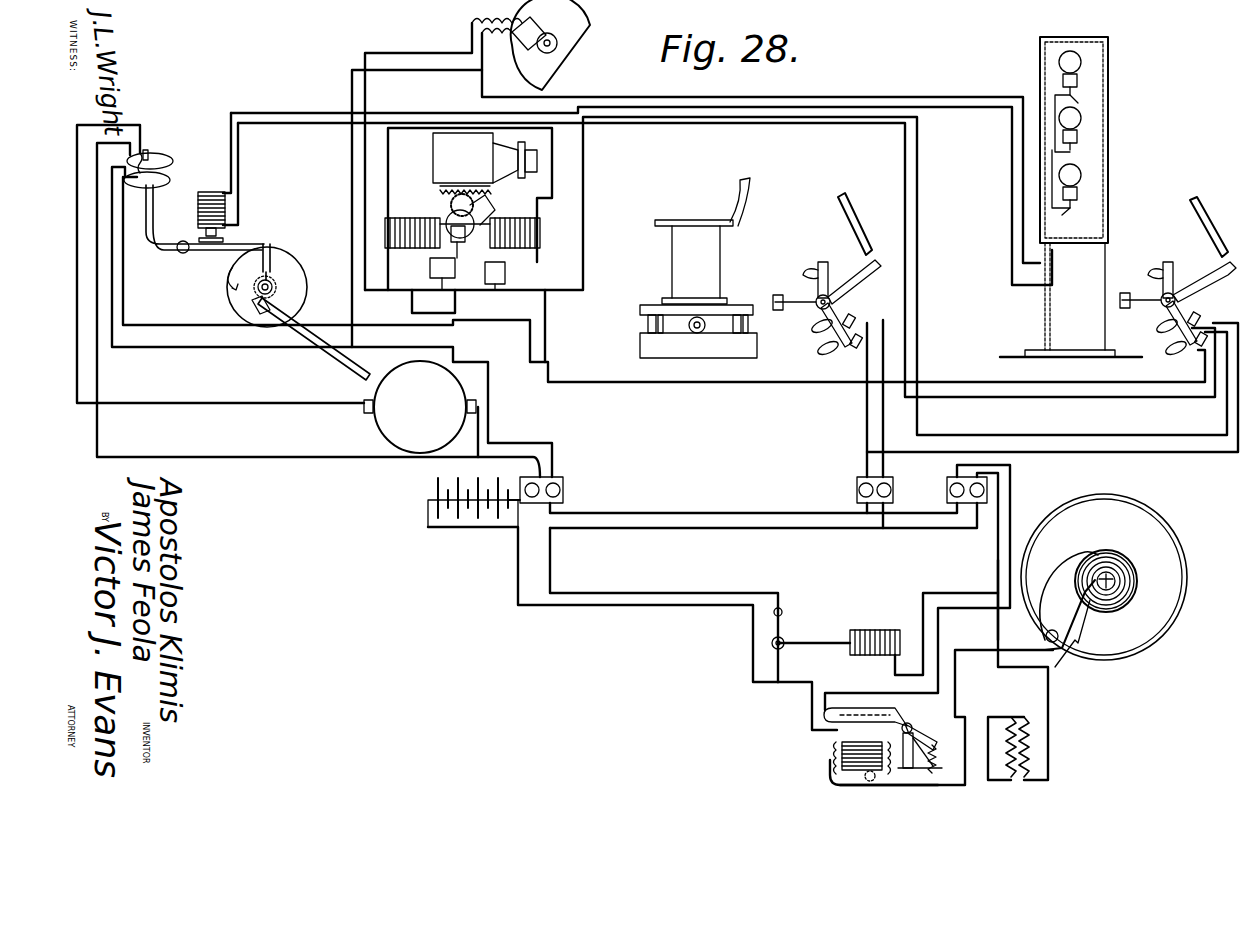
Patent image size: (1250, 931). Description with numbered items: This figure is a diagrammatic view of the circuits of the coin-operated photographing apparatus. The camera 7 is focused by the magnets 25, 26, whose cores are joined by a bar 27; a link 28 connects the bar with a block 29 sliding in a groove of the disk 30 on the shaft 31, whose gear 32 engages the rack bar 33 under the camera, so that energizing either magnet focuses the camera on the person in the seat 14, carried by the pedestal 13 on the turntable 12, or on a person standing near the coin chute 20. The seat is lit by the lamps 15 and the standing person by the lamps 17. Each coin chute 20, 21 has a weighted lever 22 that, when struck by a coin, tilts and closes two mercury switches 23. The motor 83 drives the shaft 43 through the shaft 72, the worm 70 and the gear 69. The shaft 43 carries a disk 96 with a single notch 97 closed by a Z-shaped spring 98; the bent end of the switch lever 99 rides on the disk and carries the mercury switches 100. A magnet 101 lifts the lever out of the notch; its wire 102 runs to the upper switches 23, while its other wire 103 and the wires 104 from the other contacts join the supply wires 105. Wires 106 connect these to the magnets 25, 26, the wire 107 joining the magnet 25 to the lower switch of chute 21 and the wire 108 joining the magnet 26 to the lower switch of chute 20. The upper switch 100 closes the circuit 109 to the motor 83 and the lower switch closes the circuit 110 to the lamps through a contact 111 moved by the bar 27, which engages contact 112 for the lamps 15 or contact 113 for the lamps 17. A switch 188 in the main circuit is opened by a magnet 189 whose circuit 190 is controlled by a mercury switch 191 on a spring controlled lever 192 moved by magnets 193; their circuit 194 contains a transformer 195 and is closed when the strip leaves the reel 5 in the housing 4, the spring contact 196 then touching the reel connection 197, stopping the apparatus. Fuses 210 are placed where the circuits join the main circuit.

The housing 4 is at (1185, 590).
The reel 5 is at (1112, 555).
The camera 7 is at (471, 208).
The turntable 12 is at (672, 292).
The pedestal 13 is at (672, 270).
The seat 14 is at (688, 220).
The lamps 15 is at (550, 46).
The lamps 17 is at (1078, 62).
The coin chute 20 is at (1205, 197).
The coin chute 21 is at (858, 185).
The weighted lever 22 is at (868, 280).
The mercury switches 23 is at (815, 330).
The magnet 25 is at (395, 250).
The magnet 26 is at (535, 244).
The bar 27 is at (520, 224).
The link 28 is at (458, 244).
The block 29 is at (474, 224).
The disk 30 is at (451, 205).
The shaft 31 is at (485, 198).
The gear 32 is at (463, 183).
The rack bar 33 is at (440, 190).
The shaft 43 is at (272, 280).
The gear 69 is at (265, 315).
The worm 70 is at (250, 302).
The shaft 72 is at (330, 320).
The motor 83 is at (395, 432).
The disk 96 is at (211, 287).
The notch 97 is at (210, 262).
The spring 98 is at (272, 255).
The switch lever 99 is at (170, 258).
The mercury switches 100 is at (170, 180).
The magnet 101 is at (225, 203).
The wire 102 is at (730, 122).
The wire 103 is at (917, 215).
The wires 104 is at (867, 425).
The supply wires 105 is at (815, 528).
The wires 106 is at (388, 128).
The wire 107 is at (495, 322).
The wire 108 is at (548, 330).
The circuit 109 is at (97, 380).
The circuit 110 is at (205, 335).
The contact 111 is at (462, 296).
The contact 112 is at (430, 270).
The contact 113 is at (505, 272).
The switch 188 is at (785, 618).
The magnet 189 is at (875, 628).
The circuit 190 is at (973, 575).
The mercury switch 191 is at (826, 722).
The spring controlled lever 192 is at (895, 718).
The magnets 193 is at (842, 762).
The circuit 194 is at (965, 785).
The transformer 195 is at (1040, 740).
The spring contact 196 is at (1060, 553).
The reel connection 197 is at (1092, 600).
The fuses 210 is at (560, 485).